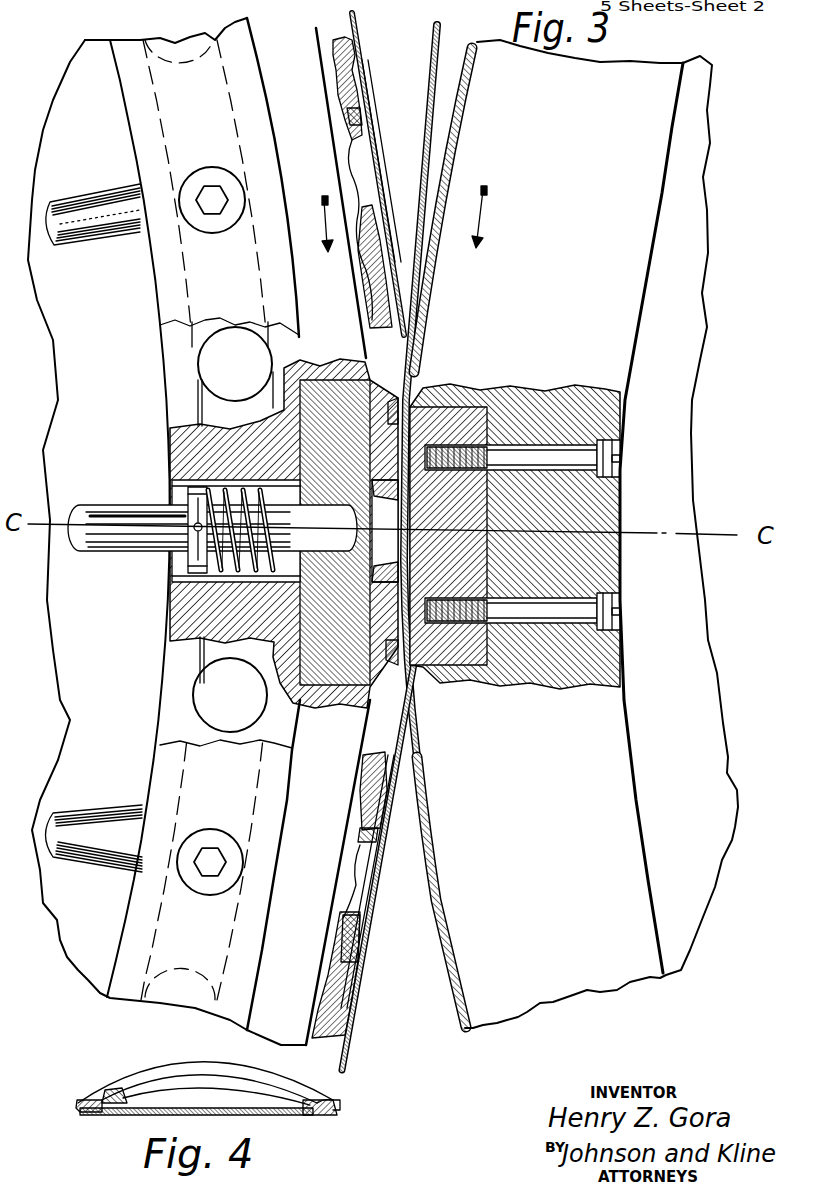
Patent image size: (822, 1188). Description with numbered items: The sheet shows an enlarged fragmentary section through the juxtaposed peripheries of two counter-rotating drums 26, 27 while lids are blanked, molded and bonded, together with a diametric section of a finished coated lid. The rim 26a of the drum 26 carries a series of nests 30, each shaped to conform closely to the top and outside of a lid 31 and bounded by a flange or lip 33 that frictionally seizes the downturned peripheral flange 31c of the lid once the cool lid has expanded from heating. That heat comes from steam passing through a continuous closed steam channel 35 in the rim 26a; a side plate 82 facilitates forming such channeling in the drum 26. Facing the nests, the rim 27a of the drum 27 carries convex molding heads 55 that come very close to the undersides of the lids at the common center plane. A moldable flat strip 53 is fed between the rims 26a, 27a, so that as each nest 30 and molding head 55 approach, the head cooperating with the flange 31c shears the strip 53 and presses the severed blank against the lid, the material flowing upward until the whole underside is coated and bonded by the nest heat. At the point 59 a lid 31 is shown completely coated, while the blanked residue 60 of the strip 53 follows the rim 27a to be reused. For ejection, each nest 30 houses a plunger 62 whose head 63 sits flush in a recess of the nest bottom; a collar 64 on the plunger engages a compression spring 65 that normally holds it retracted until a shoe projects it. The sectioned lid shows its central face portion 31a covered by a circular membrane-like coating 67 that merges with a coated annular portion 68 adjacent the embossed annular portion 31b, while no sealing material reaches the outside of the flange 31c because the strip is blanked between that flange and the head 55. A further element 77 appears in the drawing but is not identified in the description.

In FIG. 3, the drum 26 is at (73, 717).
In FIG. 3, the rim of drum 26a is at (283, 1036).
In FIG. 3, the drum 27 is at (711, 107).
In FIG. 3, the rim of drum 27a is at (623, 248).
In FIG. 3, the nest 30 is at (344, 667).
In FIG. 3, the lid 31 is at (366, 62).
In FIG. 4, the lid 31 is at (114, 1060).
In FIG. 4, the central face portion 31a is at (200, 1097).
In FIG. 4, the annular portion 31b is at (318, 1094).
In FIG. 4, the downturned peripheral flange 31c is at (341, 1110).
In FIG. 3, the flange or lip 33 is at (401, 663).
In FIG. 3, the steam channel 35 is at (217, 363).
In FIG. 3, the moldable flat strip 53 is at (431, 45).
In FIG. 3, the molding head 55 is at (469, 55).
In FIG. 3, the point 59 is at (375, 1005).
In FIG. 3, the blanked residue 60 is at (426, 740).
In FIG. 3, the plunger 62 is at (87, 205).
In FIG. 3, the head 63 is at (388, 531).
In FIG. 3, the collar 64 is at (190, 565).
In FIG. 3, the compression spring 65 is at (207, 483).
In FIG. 4, the circular membrane-like coating 67 is at (147, 1117).
In FIG. 4, the coated annular portion 68 is at (325, 1118).
In FIG. 3, the retaining plate 77 is at (352, 38).
In FIG. 3, the side plate 82 is at (133, 107).